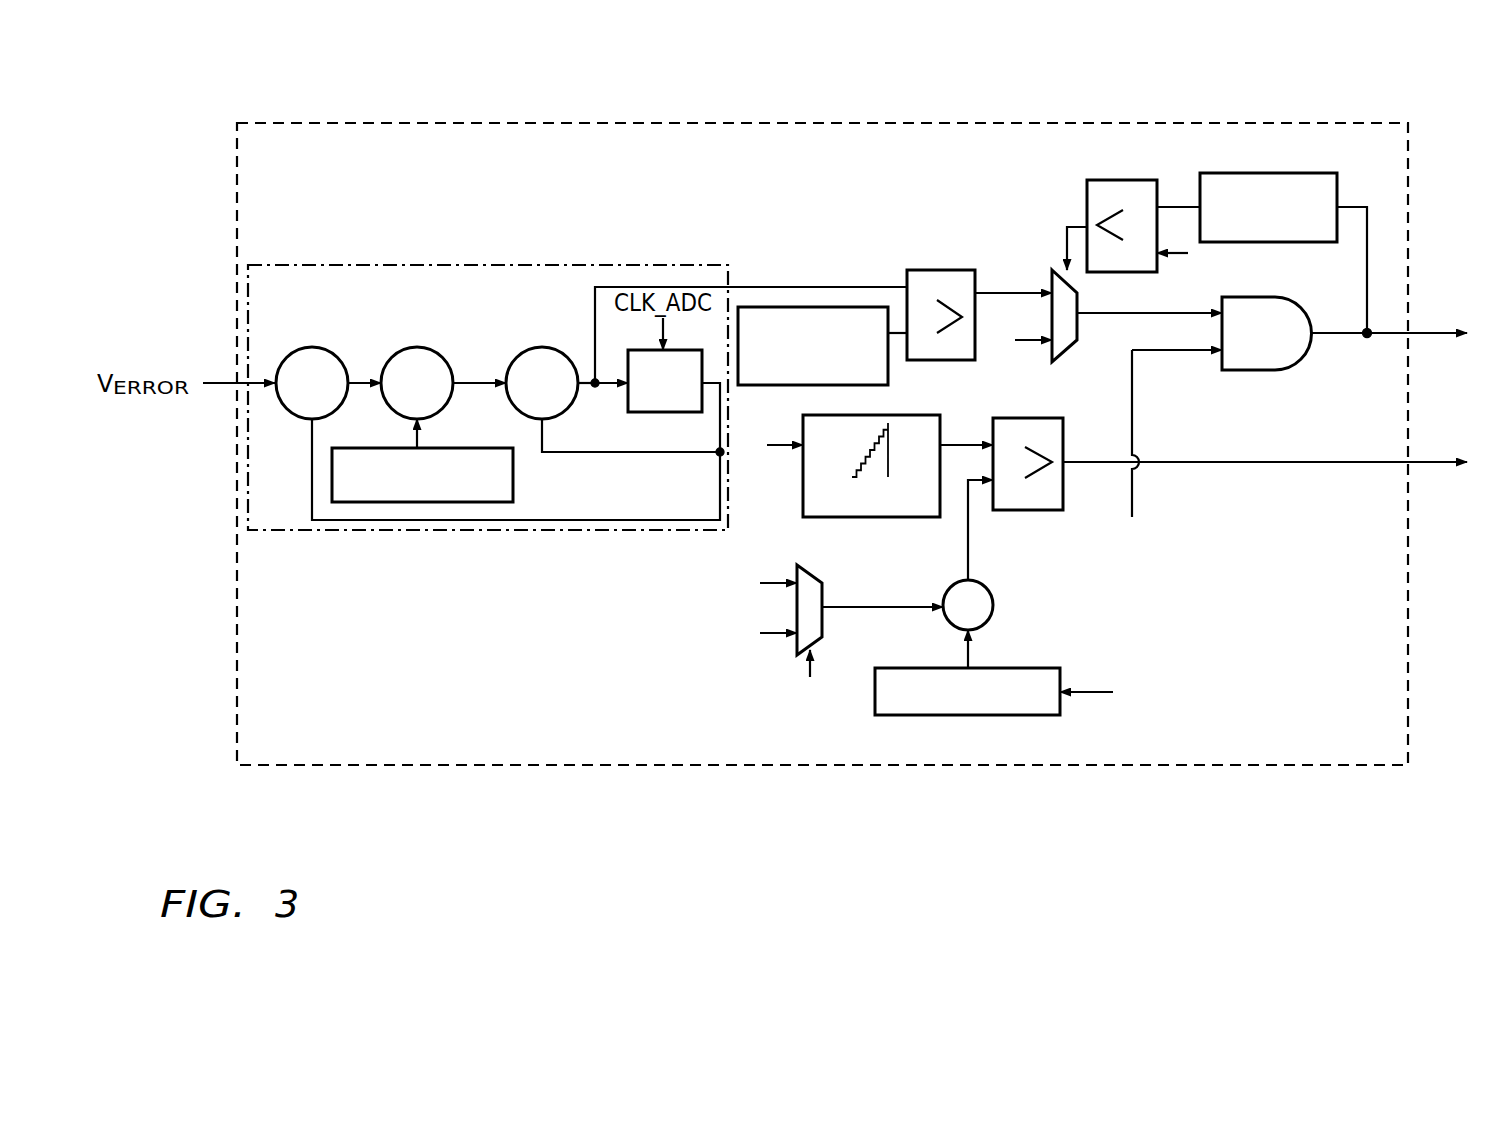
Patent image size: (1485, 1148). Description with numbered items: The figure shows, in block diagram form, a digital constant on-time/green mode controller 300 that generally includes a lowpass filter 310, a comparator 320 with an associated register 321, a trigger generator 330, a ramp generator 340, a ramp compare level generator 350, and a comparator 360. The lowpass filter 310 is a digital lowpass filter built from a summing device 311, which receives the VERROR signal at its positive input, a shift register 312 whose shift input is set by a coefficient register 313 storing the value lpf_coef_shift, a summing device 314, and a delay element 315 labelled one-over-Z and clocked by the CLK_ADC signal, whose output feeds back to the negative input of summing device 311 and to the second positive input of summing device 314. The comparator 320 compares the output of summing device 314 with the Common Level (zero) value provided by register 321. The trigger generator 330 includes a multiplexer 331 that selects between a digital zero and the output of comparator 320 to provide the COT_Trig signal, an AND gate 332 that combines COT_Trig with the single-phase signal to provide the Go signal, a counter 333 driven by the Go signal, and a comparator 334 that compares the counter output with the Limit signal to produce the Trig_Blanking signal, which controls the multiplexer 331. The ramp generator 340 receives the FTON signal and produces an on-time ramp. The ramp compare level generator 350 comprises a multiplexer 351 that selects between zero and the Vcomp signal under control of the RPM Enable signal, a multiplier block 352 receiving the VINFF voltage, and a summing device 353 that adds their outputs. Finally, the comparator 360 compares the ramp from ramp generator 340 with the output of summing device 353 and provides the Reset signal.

The digital constant on-time/green mode controller 300 is at (341, 123).
The lowpass filter 310 is at (425, 265).
The summing device 311 is at (308, 346).
The shift register 312 is at (418, 346).
The coefficient register 313 is at (515, 470).
The summing device 314 is at (538, 346).
The delay element 315 is at (660, 412).
The comparator 320 is at (932, 270).
The register 321 is at (782, 307).
The trigger generator 330 is at (1043, 172).
The multiplexer 331 is at (1080, 328).
The AND gate 332 is at (1276, 370).
The counter 333 is at (1250, 173).
The comparator 334 is at (1112, 180).
The ramp generator 340 is at (905, 415).
The ramp compare level generator 350 is at (745, 670).
The multiplexer 351 is at (826, 597).
The multiplier block 352 is at (997, 667).
The summing device 353 is at (988, 585).
The comparator 360 is at (1067, 433).